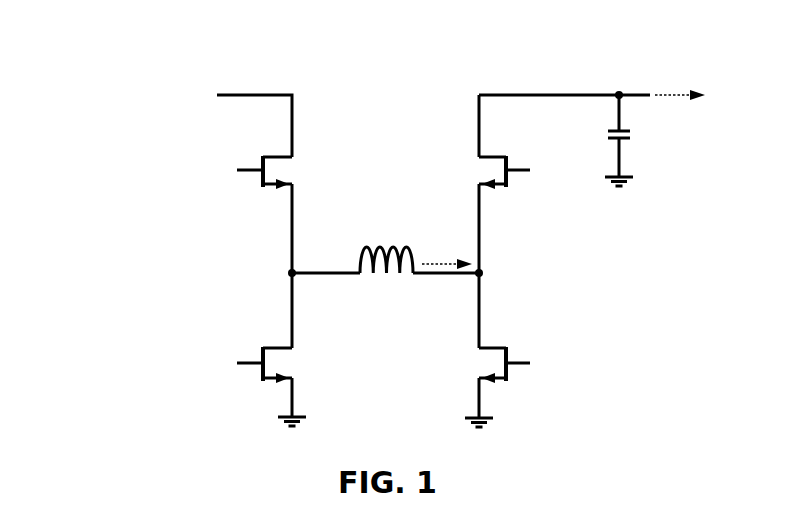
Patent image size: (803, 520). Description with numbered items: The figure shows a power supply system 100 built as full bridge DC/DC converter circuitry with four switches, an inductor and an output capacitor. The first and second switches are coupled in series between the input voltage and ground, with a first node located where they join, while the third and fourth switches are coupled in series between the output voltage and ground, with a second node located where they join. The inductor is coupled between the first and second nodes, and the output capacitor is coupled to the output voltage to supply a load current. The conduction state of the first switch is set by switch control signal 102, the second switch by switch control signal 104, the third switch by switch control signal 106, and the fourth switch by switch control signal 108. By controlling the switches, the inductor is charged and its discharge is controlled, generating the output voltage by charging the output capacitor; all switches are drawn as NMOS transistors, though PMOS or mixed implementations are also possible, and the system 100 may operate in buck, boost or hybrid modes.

The power supply system 100 is at (137, 70).
The switch control signal 102 is at (248, 165).
The switch control signal 104 is at (248, 357).
The switch control signal 106 is at (525, 175).
The switch control signal 108 is at (527, 372).